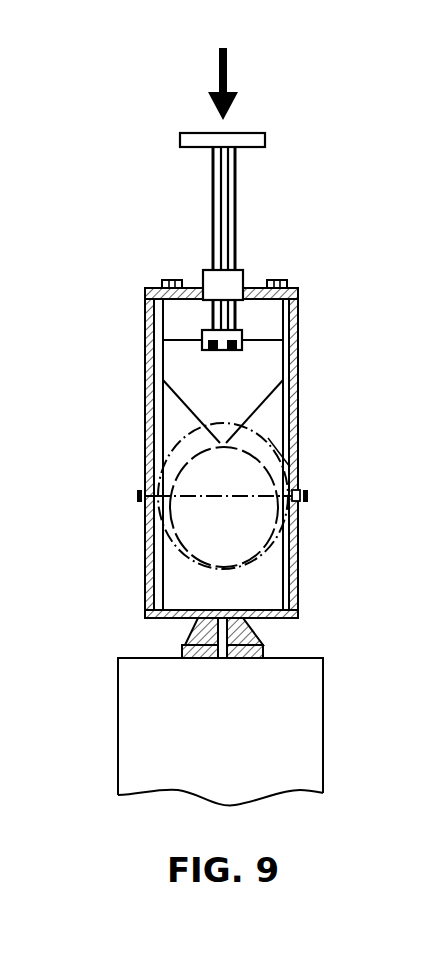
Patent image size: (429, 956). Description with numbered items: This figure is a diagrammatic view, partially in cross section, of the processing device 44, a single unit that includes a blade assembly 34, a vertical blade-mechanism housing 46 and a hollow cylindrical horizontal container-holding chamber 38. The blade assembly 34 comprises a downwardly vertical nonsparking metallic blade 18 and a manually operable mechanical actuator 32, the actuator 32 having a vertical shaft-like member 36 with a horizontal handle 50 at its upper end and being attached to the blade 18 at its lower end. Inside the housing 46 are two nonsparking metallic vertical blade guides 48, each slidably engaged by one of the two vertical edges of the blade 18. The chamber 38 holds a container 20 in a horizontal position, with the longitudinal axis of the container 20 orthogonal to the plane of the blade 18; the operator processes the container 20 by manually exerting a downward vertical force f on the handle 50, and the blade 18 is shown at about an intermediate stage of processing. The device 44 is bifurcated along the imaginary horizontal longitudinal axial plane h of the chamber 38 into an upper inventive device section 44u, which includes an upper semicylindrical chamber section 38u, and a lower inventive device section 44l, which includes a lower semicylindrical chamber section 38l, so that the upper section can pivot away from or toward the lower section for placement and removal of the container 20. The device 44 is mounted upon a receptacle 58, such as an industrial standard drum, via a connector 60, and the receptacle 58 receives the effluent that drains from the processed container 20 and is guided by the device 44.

The downward vertical force f is at (223, 68).
The horizontal handle 50 is at (243, 133).
The manually operable mechanical actuator 32 is at (240, 217).
The vertical shaft-like member 36 is at (211, 190).
The blade assembly 34 is at (262, 254).
The processing device 44 is at (123, 180).
The upper inventive device section 44u is at (302, 327).
The lower inventive device section 44l is at (303, 578).
The vertical blade-mechanism housing 46 is at (141, 373).
The blade 18 is at (258, 362).
The vertical blade guides 48 is at (150, 423).
The container-holding chamber 38 is at (300, 452).
The upper semicylindrical chamber section 38u is at (158, 485).
The lower semicylindrical chamber section 38l is at (158, 508).
The container 20 is at (215, 535).
The horizontal longitudinal axial plane h is at (227, 497).
The connector 60 is at (257, 632).
The receptacle 58 is at (328, 743).